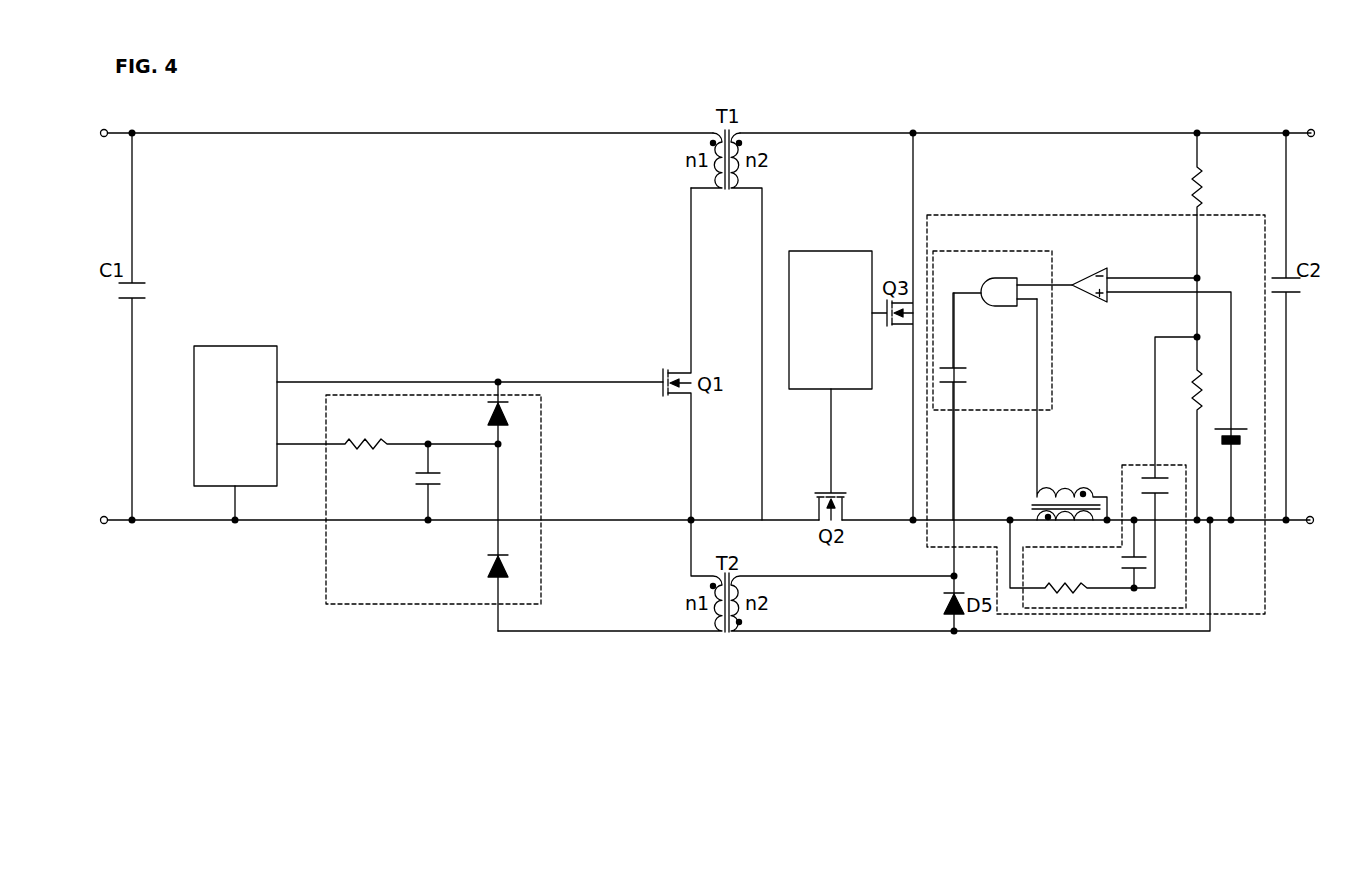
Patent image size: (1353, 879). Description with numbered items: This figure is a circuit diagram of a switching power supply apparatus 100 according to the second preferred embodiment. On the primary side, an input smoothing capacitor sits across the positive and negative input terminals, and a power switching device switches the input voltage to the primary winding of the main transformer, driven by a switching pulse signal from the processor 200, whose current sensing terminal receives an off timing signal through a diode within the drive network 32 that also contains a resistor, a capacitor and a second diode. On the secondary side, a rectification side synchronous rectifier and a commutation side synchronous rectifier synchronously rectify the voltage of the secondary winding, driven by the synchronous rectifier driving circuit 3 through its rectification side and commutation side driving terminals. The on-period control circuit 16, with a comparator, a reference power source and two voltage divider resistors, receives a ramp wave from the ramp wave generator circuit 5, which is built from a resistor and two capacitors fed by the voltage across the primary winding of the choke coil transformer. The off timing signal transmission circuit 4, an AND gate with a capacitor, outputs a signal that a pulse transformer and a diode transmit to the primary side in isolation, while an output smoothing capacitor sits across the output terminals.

The switching power supply apparatus 100 is at (1203, 79).
The processor 200 is at (277, 346).
The synchronous rectifier driving circuit 3 is at (826, 251).
The off timing signal transmission circuit 4 is at (983, 251).
The ramp wave generator circuit 5 is at (1133, 465).
The on-period control circuit 16 is at (1082, 215).
The gate drive circuit 32 is at (326, 604).